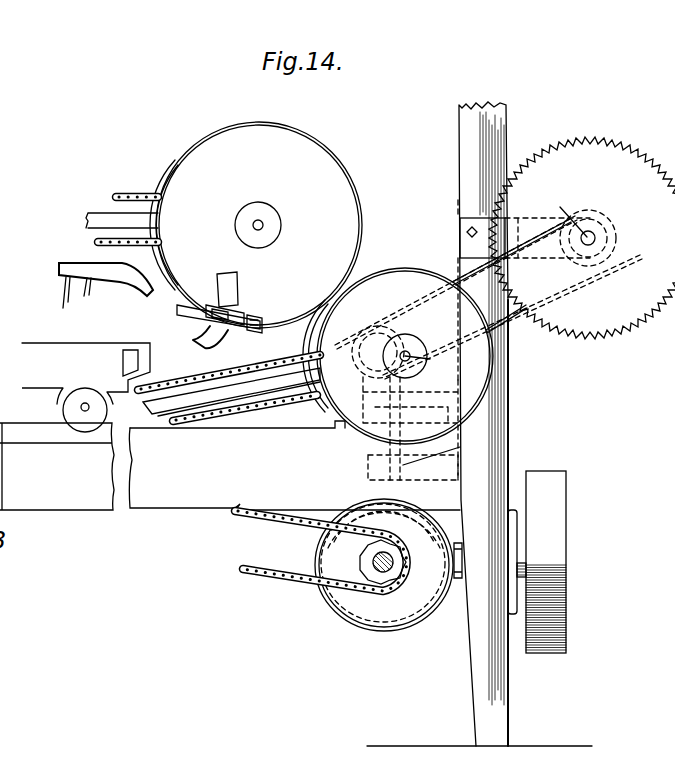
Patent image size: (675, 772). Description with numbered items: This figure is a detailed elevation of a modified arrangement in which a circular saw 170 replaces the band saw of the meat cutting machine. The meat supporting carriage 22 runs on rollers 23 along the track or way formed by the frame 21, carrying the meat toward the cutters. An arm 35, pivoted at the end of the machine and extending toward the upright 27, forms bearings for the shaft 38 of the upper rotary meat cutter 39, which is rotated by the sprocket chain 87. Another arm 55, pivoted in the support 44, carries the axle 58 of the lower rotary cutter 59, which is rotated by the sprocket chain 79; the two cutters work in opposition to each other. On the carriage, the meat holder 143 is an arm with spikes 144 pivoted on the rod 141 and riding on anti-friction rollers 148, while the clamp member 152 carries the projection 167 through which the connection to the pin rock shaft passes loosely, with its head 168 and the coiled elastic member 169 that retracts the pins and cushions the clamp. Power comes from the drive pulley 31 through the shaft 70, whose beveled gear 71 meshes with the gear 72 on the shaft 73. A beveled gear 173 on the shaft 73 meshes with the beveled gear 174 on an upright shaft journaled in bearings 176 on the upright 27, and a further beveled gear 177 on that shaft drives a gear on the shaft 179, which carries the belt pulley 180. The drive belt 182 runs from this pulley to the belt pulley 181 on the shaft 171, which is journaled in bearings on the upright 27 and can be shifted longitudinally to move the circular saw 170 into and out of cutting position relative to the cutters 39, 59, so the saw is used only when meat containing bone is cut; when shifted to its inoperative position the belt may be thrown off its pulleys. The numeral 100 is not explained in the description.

The upright 27 is at (465, 164).
The drive belt 182 is at (455, 278).
The rotary meat cutter 39 is at (299, 157).
The shaft of rotary cutter 38 is at (258, 230).
The rotary cutter 59 is at (400, 280).
The belt pulley 180 is at (398, 330).
The shaft 179 is at (368, 325).
The axle of cutter 58 is at (428, 358).
The beveled gear 177 is at (340, 424).
The bearings 176 is at (366, 466).
The beveled gear 174 is at (358, 494).
The circular saw 170 is at (600, 175).
The belt pulley 181 is at (598, 216).
The shaft 171 is at (552, 210).
The sprocket chain 87 is at (129, 195).
The arm 35 is at (91, 213).
The meat holder 143 is at (66, 250).
The spikes 144 is at (65, 296).
The clamp member 152 is at (230, 282).
The anti-friction rollers 148 is at (192, 302).
The bar or rod 141 is at (240, 304).
The head 168 is at (262, 298).
The projection 167 is at (254, 322).
The catch 100 is at (272, 330).
The elastic member 169 is at (296, 340).
The meat supporting carriage 22 is at (86, 373).
The rollers 23 is at (65, 413).
The track or way 21 is at (30, 432).
The support 44 is at (160, 463).
The sprocket chain 79 is at (163, 384).
The arm 55 is at (216, 396).
The beveled gear 173 is at (301, 502).
The gear 72 is at (350, 620).
The shaft 73 is at (374, 560).
The beveled gear 71 is at (448, 610).
The shaft 70 is at (518, 566).
The drive pulley 31 is at (556, 600).